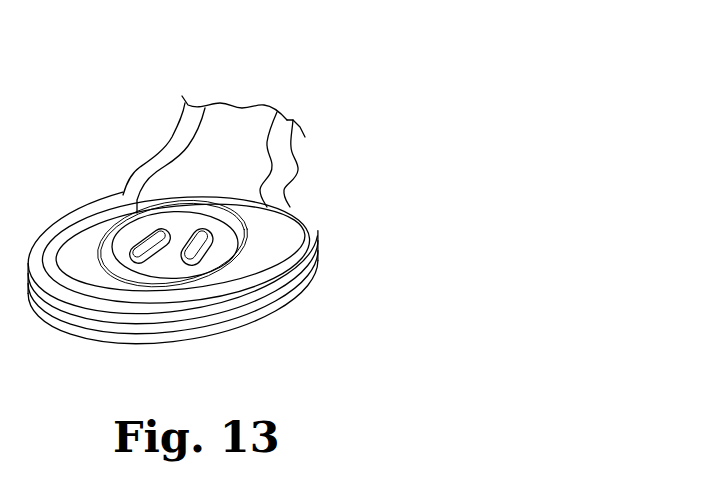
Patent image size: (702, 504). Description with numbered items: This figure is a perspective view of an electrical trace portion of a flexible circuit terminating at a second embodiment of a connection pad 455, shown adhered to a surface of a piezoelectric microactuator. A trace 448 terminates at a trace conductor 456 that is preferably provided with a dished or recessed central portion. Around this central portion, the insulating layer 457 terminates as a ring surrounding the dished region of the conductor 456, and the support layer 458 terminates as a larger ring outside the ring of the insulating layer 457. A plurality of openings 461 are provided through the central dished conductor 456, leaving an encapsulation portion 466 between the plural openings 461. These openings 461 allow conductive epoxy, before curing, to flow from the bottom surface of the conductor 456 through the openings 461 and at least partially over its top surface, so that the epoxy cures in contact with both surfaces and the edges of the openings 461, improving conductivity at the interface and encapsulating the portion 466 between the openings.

The trace 448 is at (240, 117).
The connection pad 455 is at (122, 194).
The trace conductor 456 is at (258, 241).
The insulating layer 457 is at (268, 267).
The support layer 458 is at (265, 296).
The openings 461 is at (168, 232).
The encapsulation portion 466 is at (172, 253).